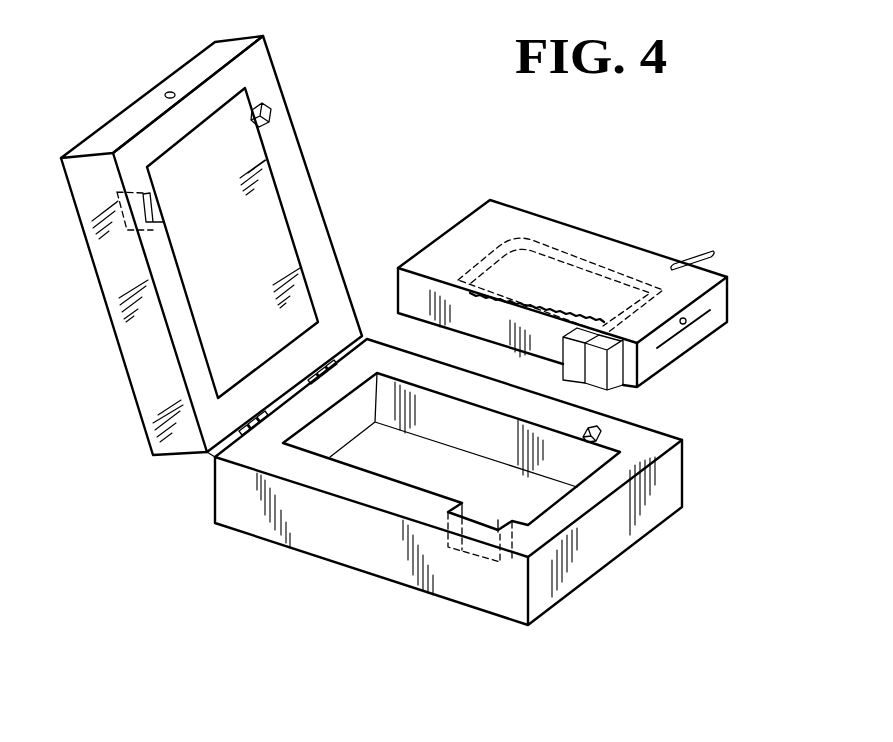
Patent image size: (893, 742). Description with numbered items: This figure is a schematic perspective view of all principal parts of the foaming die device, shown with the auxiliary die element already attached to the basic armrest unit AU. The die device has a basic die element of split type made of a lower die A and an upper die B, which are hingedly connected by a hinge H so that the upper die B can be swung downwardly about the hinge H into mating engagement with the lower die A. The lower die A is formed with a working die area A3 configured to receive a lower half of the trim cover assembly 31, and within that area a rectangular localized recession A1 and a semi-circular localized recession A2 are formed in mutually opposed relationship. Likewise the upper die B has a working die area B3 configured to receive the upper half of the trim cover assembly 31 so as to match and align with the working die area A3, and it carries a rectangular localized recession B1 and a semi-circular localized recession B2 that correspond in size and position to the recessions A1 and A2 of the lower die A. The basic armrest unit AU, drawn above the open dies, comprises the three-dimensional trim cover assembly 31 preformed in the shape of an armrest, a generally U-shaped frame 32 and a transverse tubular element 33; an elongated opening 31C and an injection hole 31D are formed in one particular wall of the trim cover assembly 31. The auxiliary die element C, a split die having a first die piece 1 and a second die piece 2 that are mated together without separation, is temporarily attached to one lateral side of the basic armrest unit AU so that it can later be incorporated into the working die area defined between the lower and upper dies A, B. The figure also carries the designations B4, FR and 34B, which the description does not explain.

The lower die A is at (489, 482).
The rectangular localized recession A1 is at (487, 517).
The semi-circular localized recession A2 is at (600, 432).
The working die area A3 is at (563, 468).
The upper die B is at (224, 243).
The rectangular localized recession B1 is at (153, 203).
The semi-circular localized recession B2 is at (272, 108).
The working die area B3 is at (228, 318).
The hole in lid edge B4 is at (169, 93).
The hinge H is at (326, 359).
The auxiliary die element C is at (552, 339).
The first die piece 1 is at (577, 378).
The second die piece 2 is at (590, 384).
The basic armrest unit AU is at (607, 271).
The trim cover assembly 31 is at (533, 223).
The generally U-shaped frame 32 is at (578, 250).
The transverse tubular element 33 is at (680, 257).
The front direction FR is at (634, 254).
The pin 34B is at (714, 254).
The elongated opening 31C is at (673, 338).
The injection hole 31D is at (688, 322).